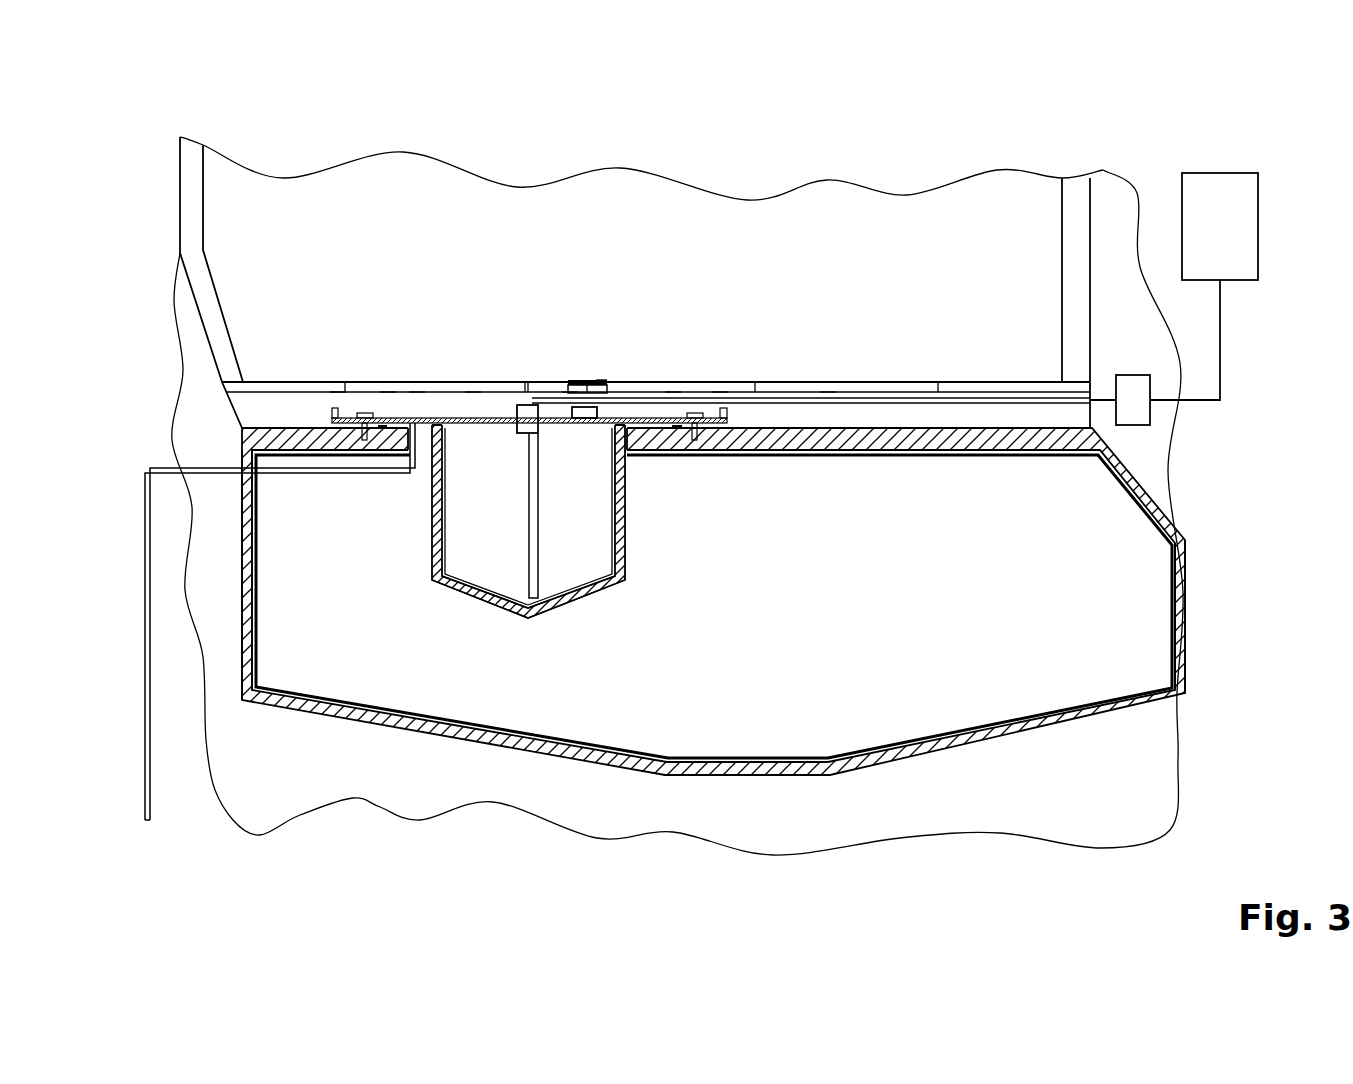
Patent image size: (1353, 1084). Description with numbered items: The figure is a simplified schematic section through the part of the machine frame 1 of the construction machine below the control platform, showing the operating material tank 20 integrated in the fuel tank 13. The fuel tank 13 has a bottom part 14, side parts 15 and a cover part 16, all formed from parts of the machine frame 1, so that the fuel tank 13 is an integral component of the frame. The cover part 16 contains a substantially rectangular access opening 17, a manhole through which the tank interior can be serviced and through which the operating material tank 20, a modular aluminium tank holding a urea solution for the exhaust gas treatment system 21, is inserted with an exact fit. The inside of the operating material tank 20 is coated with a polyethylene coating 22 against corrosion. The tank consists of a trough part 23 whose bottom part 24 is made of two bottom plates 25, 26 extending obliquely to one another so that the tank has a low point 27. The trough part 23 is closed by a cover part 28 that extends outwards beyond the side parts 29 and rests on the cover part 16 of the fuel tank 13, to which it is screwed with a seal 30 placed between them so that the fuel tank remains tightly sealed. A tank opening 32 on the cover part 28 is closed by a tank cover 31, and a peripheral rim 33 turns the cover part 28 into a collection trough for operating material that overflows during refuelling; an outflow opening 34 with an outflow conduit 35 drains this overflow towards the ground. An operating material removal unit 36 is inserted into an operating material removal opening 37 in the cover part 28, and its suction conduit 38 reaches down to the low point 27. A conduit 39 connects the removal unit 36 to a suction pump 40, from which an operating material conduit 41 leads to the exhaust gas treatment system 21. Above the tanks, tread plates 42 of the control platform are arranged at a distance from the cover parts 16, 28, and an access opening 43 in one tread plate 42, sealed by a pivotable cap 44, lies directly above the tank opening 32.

The machine frame 1 is at (220, 858).
The fuel tank 13 is at (1207, 655).
The bottom part 14 is at (758, 770).
The side parts 15 is at (245, 582).
The cover part 16 is at (883, 440).
The access opening 17 is at (652, 387).
The operating material tank 20 is at (616, 617).
The exhaust gas treatment system 21 is at (1258, 228).
The polyethylene coating 22 is at (613, 527).
The trough part 23 is at (516, 669).
The bottom part 24 is at (444, 616).
The bottom plate 25 is at (465, 603).
The bottom plate 26 is at (589, 597).
The low point 27 is at (497, 606).
The cover part 28 is at (473, 400).
The side parts 29 is at (430, 500).
The seal 30 is at (388, 400).
The tank cover 31 is at (575, 381).
The tank opening 32 is at (585, 420).
The peripheral rim 33 is at (338, 398).
The outflow opening 34 is at (417, 397).
The outflow conduit 35 is at (145, 745).
The operating material removal unit 36 is at (527, 435).
The operating material removal opening 37 is at (528, 392).
The suction conduit 38 is at (530, 557).
The conduit 39 is at (828, 402).
The suction pump 40 is at (1150, 410).
The operating material conduit 41 is at (1220, 352).
The tread plates 42 is at (285, 388).
The access opening 43 is at (570, 393).
The pivotable cap 44 is at (598, 379).